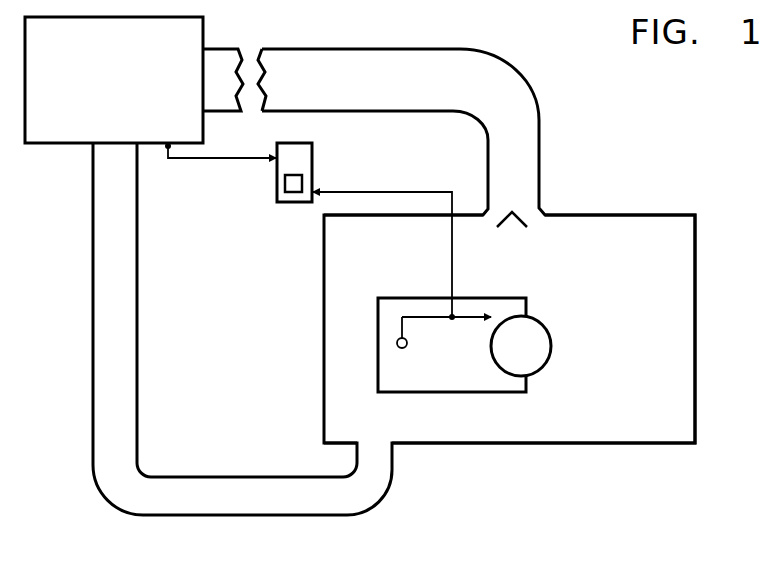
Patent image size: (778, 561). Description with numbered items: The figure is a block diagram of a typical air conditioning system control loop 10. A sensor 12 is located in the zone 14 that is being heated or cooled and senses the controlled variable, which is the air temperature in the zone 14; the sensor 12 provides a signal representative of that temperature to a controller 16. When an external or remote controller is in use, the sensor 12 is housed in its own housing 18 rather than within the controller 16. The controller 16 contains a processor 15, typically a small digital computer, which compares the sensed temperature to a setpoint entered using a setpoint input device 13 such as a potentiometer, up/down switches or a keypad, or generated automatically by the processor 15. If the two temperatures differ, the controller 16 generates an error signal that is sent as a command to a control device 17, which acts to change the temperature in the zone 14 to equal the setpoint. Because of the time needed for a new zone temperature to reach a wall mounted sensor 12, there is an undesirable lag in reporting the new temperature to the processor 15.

The air conditioning system control loop 10 is at (617, 162).
The sensor 12 is at (397, 343).
The setpoint input device 13 is at (543, 330).
The zone 14 is at (635, 362).
The processor 15 is at (285, 183).
The controller 16 is at (312, 160).
The control device 17 is at (128, 94).
The housing 18 is at (493, 297).